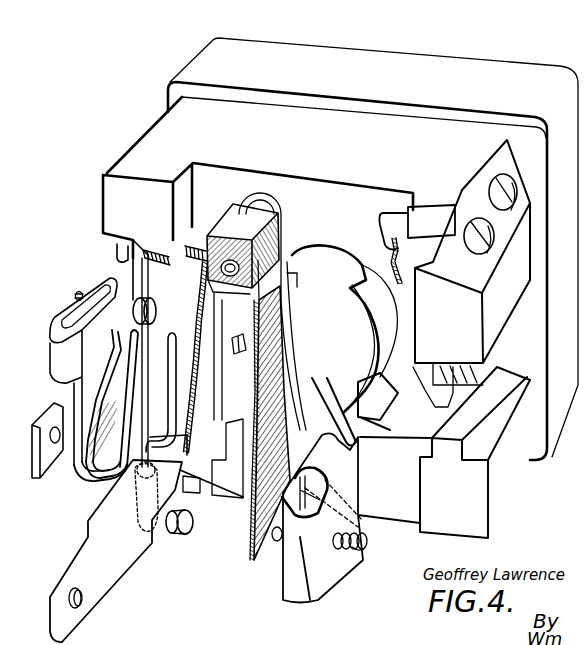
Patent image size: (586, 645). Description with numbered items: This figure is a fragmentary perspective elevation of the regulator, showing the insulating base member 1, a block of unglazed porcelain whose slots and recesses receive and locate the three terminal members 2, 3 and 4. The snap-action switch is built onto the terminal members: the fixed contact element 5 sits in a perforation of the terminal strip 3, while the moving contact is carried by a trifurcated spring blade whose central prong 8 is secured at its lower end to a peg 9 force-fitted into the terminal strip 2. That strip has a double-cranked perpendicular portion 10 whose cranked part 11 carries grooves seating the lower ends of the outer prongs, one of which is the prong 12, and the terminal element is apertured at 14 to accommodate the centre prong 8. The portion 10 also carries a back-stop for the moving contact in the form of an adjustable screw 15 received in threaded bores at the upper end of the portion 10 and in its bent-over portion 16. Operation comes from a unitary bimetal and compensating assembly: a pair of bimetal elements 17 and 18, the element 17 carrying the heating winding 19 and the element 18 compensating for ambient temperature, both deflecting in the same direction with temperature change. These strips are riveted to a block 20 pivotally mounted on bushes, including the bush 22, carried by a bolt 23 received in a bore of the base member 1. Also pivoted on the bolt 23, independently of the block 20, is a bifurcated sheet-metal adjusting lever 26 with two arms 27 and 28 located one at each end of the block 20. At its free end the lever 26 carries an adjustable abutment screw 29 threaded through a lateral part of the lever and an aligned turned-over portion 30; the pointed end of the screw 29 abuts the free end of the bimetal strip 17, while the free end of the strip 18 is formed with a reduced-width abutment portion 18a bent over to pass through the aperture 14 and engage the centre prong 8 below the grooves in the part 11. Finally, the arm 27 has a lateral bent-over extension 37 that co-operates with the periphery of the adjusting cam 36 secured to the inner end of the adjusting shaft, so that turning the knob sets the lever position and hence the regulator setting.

The base member 1 is at (470, 130).
The terminal member 2 is at (108, 572).
The terminal member 3 is at (175, 248).
The terminal member 4 is at (398, 247).
The contact element 5 is at (135, 298).
The central prong 8 is at (140, 370).
The peg 9 is at (182, 527).
The perpendicular portion 10 is at (72, 387).
The cranked part 11 is at (93, 481).
The outer prong 12 is at (115, 415).
The aperture 14 is at (137, 377).
The adjustable screw 15 is at (75, 296).
The bent-over portion 16 is at (77, 330).
The bimetal element 17 is at (257, 560).
The bimetal element 18 is at (190, 399).
The abutment portion 18a is at (150, 538).
The heating winding 19 is at (282, 356).
The block 20 is at (247, 213).
The bush 22 is at (293, 182).
The bolt 23 is at (293, 213).
The adjusting lever 26 is at (365, 535).
The arm 27 is at (307, 393).
The arm 28 is at (298, 536).
The screw 29 is at (352, 547).
The turned-over portion 30 is at (310, 490).
The adjusting cam 36 is at (370, 343).
The bent-over extension 37 is at (243, 338).